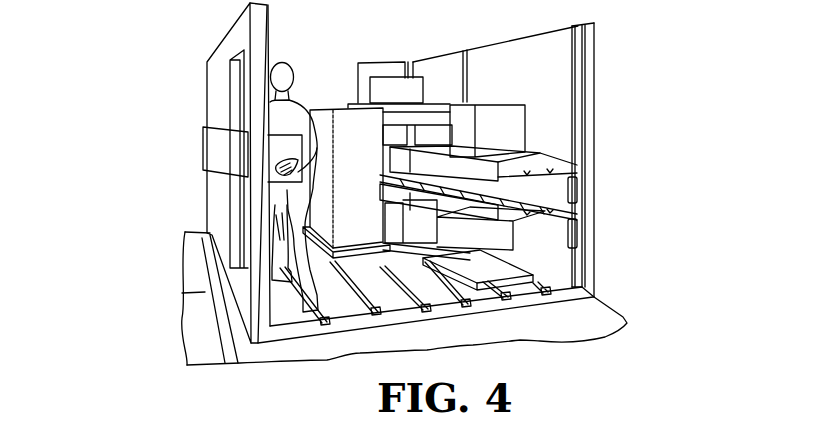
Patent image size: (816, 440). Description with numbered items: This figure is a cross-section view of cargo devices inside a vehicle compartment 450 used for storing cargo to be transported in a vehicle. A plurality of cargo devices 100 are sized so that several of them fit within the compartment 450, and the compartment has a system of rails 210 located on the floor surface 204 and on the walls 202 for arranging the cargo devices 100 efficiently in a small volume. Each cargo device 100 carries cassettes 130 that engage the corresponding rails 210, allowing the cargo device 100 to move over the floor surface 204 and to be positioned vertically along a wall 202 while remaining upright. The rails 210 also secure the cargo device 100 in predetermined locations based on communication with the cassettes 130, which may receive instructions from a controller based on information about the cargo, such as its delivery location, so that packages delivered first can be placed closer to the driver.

The vehicle compartment 450 is at (178, 158).
The wall 202 is at (527, 78).
The cargo device 100 is at (550, 203).
The cassette 130 is at (577, 233).
The floor surface 204 is at (550, 278).
The rail 210 is at (357, 303).